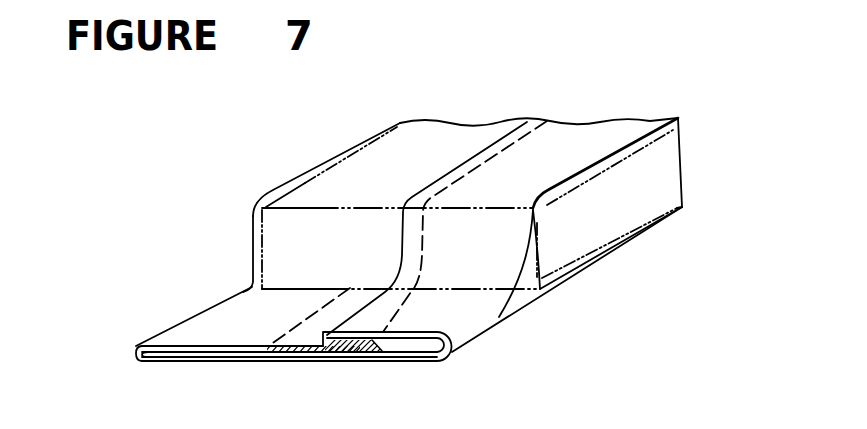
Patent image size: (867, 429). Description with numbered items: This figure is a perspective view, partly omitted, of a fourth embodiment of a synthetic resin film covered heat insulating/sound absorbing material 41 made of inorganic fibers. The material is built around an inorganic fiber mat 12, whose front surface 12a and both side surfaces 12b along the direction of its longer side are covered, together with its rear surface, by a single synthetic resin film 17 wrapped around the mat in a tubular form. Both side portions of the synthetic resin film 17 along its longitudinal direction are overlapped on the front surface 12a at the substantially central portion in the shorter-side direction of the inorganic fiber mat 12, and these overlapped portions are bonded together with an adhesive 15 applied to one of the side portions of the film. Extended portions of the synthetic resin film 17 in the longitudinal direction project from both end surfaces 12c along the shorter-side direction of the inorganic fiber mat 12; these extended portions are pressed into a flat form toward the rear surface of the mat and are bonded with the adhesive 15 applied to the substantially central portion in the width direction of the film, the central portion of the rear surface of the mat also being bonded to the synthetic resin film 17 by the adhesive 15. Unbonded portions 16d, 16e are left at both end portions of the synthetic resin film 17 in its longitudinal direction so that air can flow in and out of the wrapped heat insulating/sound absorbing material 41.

The heat insulating/sound absorbing material 41 is at (255, 187).
The inorganic fiber mat 12 is at (633, 200).
The front surface 12a is at (367, 160).
The side surfaces 12b is at (597, 233).
The end surfaces 12c is at (305, 243).
The synthetic resin film 17 is at (220, 322).
The unbonded portion 16d is at (217, 358).
The unbonded portion 16e is at (430, 348).
The adhesive 15 is at (302, 358).